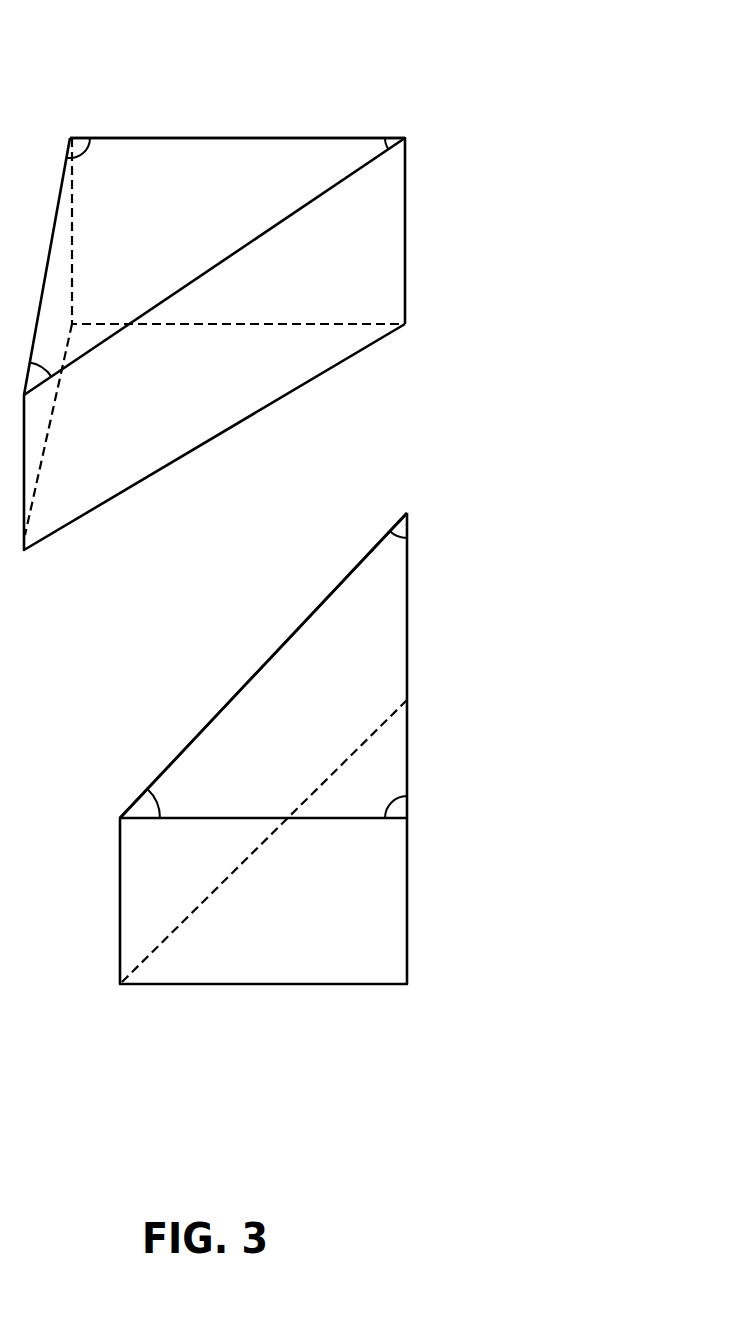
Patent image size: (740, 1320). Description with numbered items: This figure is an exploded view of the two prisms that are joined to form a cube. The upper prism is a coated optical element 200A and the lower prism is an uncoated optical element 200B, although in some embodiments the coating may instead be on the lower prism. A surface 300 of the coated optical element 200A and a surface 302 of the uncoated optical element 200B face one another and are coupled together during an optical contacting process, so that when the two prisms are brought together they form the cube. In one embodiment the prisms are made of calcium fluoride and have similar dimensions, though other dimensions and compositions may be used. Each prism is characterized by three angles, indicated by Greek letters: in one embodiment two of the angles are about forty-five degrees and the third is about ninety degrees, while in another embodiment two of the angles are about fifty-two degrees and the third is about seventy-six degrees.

The surface 300 is at (114, 118).
The coated optical element 200A is at (250, 137).
The uncoated optical element 200B is at (283, 642).
The surface 302 is at (180, 724).